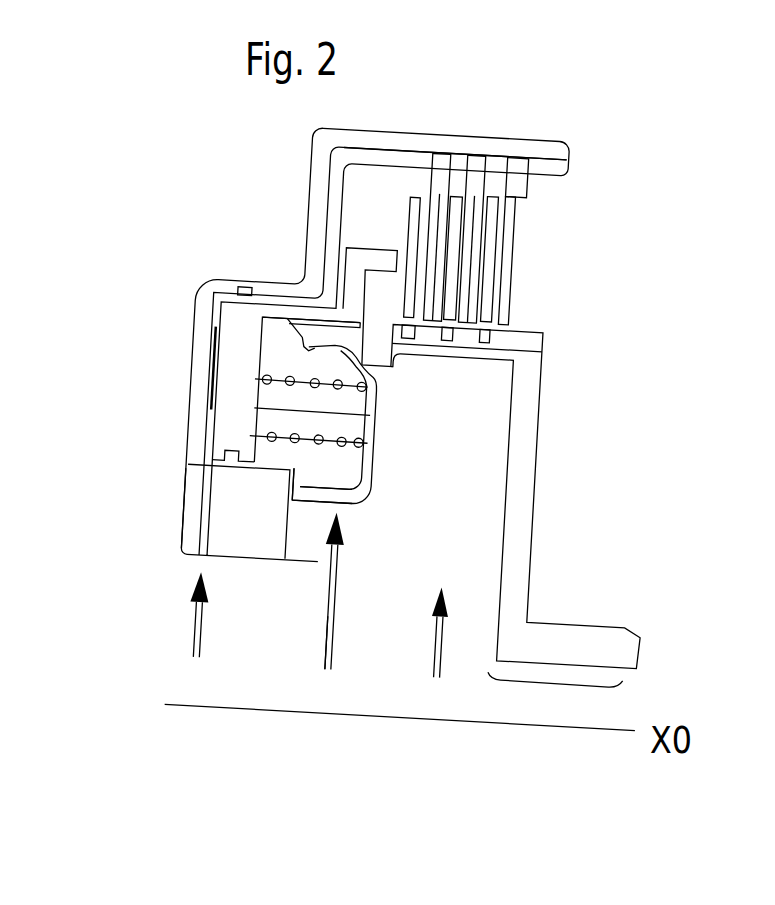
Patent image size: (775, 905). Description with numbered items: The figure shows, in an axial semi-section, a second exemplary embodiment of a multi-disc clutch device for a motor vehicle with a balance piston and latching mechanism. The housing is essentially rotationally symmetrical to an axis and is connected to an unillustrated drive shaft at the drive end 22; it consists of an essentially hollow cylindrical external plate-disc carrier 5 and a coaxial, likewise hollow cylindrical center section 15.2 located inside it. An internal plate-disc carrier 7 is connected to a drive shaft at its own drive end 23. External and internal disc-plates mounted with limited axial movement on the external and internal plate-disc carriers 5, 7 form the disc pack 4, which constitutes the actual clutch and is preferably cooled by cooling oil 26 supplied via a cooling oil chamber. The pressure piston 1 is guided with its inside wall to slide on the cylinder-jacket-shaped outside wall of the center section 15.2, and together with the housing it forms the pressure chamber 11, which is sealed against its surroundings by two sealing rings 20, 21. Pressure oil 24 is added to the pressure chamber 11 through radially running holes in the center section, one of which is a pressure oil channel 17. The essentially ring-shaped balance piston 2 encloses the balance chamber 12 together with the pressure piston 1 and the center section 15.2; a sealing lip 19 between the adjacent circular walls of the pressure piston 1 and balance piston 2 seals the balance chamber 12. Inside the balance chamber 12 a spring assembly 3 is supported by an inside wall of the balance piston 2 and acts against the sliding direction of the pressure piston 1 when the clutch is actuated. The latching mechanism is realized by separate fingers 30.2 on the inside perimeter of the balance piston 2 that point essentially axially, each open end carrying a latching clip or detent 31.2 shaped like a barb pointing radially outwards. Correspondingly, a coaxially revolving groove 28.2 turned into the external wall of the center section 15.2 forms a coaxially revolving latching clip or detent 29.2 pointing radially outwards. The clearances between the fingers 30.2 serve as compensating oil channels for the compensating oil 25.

The pressure piston 1 is at (234, 386).
The balance piston 2 is at (378, 424).
The spring assembly 3 is at (310, 424).
The disc pack 4 is at (472, 250).
The external plate-disc carrier 5 is at (543, 150).
The internal plate-disc carrier 7 is at (528, 440).
The pressure chamber 11 is at (207, 306).
The balance chamber 12 is at (285, 355).
The center section 15.2 is at (258, 532).
The pressure oil channel 17 is at (196, 548).
The sealing lip 19 is at (293, 325).
The sealing ring 20 is at (238, 290).
The sealing ring 21 is at (222, 449).
The drive end 22 is at (381, 707).
The drive end 23 is at (485, 670).
The pressure oil 24 is at (201, 575).
The compensating oil 25 is at (341, 627).
The cooling oil 26 is at (444, 651).
The groove 28.2 is at (287, 513).
The latching clip or detent 29.2 is at (367, 668).
The fingers 30.2 is at (320, 494).
The latching clip or detent 31.2 is at (301, 512).